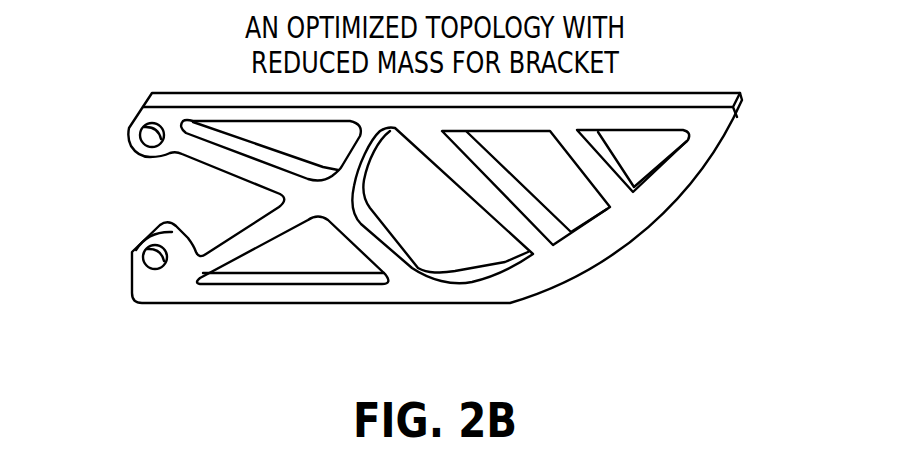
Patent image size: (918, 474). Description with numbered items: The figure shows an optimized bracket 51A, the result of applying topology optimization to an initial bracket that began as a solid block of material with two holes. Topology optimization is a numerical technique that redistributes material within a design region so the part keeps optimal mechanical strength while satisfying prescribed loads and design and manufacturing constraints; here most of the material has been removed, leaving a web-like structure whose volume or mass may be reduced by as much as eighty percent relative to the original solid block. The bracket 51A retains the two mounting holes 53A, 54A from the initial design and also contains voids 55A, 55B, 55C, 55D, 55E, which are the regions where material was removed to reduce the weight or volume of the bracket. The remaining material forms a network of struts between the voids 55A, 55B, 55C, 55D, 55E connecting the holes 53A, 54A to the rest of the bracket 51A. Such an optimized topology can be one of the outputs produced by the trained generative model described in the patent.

The optimized bracket 51A is at (720, 146).
The hole 53A is at (150, 137).
The hole 54A is at (150, 258).
The void 55A is at (647, 152).
The void 55B is at (558, 205).
The void 55C is at (462, 240).
The void 55D is at (292, 258).
The void 55E is at (242, 130).